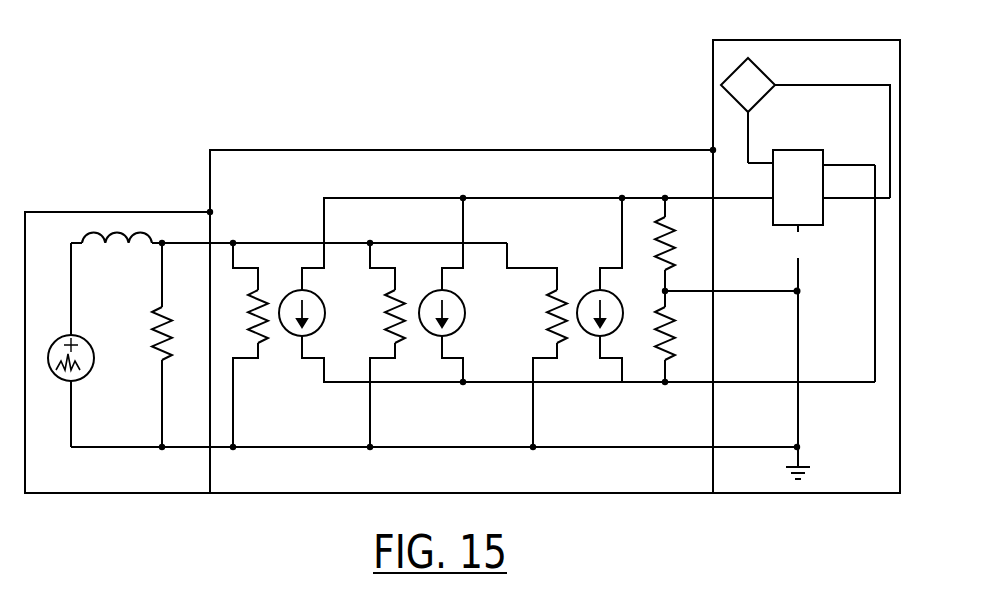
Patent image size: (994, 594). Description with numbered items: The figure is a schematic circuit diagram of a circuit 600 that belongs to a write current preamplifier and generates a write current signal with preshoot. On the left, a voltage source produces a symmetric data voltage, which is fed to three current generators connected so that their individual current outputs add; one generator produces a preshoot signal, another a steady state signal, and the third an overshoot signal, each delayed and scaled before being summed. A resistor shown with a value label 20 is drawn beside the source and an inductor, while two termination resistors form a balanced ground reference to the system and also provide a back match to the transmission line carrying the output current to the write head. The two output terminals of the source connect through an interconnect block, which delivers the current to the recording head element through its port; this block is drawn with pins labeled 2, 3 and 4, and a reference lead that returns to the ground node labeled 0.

The circuit 600 is at (433, 125).
The resistor R4 (20 ohm) 20 is at (181, 345).
The N-port pin 2 is at (754, 180).
The N-port pin 3 is at (849, 151).
The N-port pin 4 is at (856, 183).
The ground node 0 is at (801, 459).